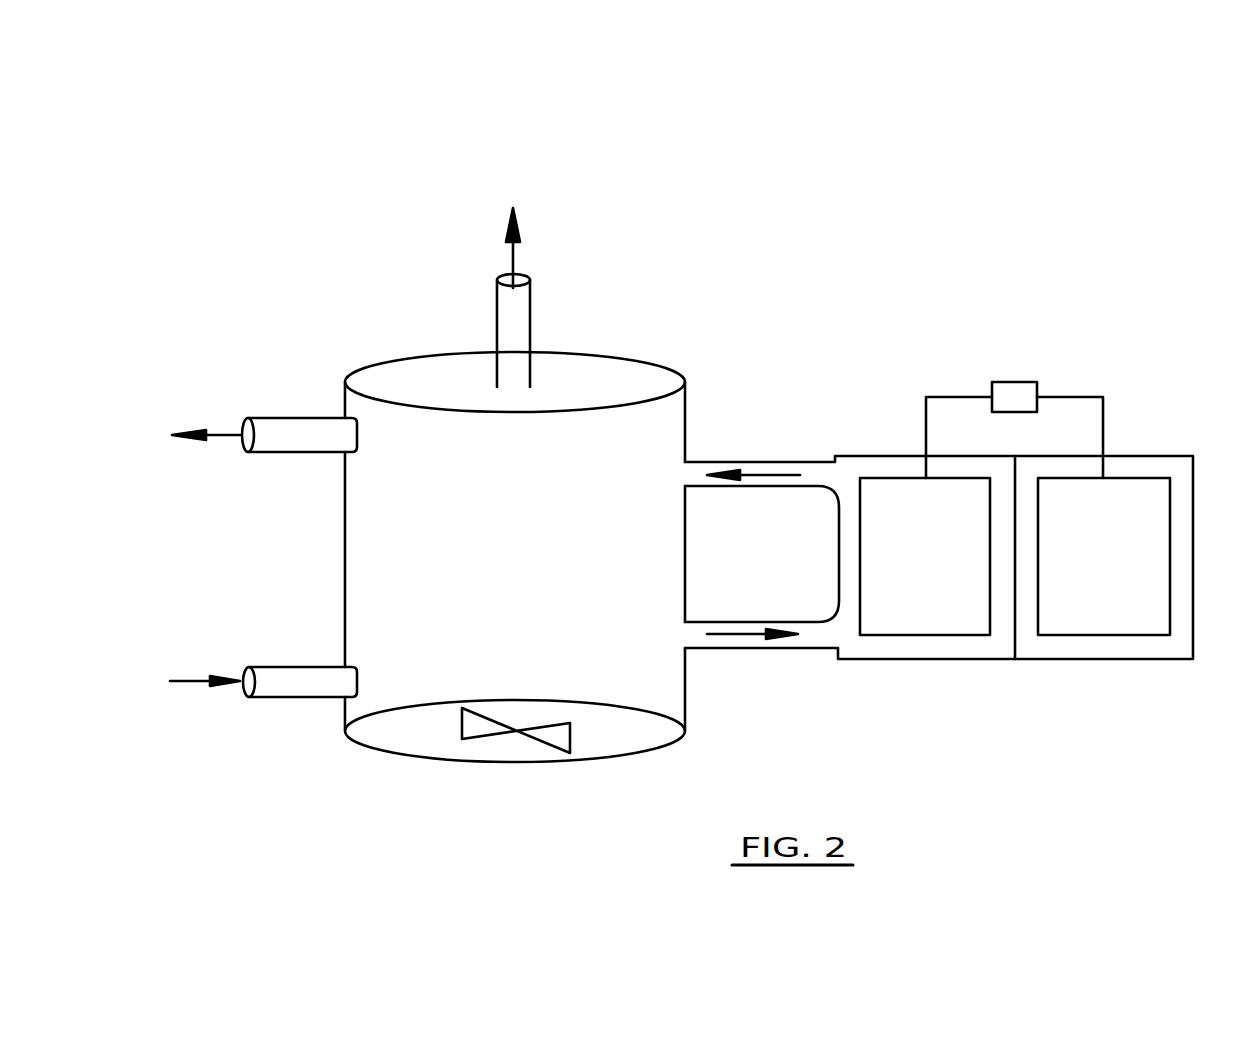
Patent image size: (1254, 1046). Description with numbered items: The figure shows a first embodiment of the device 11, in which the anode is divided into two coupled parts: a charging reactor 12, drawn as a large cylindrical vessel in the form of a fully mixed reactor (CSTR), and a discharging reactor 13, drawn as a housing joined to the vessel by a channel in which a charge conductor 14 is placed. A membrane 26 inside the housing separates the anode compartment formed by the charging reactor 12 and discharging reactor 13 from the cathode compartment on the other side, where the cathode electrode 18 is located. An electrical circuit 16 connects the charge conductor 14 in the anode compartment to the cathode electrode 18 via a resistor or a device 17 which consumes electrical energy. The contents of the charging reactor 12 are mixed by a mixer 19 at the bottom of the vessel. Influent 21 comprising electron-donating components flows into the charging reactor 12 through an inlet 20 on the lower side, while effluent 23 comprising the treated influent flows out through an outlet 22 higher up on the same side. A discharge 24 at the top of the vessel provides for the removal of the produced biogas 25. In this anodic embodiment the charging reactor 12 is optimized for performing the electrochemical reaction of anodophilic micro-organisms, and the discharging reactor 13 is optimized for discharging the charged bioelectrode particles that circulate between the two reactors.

The device 11 is at (677, 522).
The charging reactor 12 is at (602, 378).
The discharging reactor 13 is at (907, 455).
The charge conductor 14 is at (879, 493).
The electrical circuit 16 is at (1087, 395).
The device which consumes electrical energy 17 is at (1011, 388).
The cathode electrode 18 is at (1138, 492).
The mixer 19 is at (557, 735).
The inlet 20 is at (303, 677).
The influent 21 is at (191, 678).
The outlet 22 is at (298, 428).
The effluent 23 is at (227, 433).
The discharge 24 is at (508, 328).
The biogas 25 is at (512, 258).
The membrane 26 is at (1013, 640).